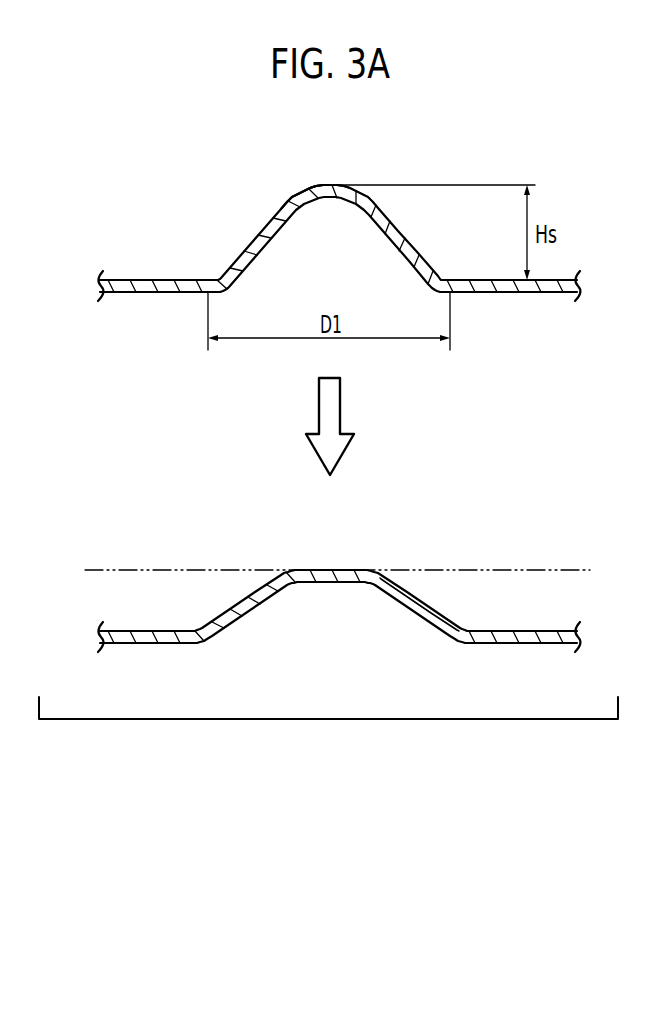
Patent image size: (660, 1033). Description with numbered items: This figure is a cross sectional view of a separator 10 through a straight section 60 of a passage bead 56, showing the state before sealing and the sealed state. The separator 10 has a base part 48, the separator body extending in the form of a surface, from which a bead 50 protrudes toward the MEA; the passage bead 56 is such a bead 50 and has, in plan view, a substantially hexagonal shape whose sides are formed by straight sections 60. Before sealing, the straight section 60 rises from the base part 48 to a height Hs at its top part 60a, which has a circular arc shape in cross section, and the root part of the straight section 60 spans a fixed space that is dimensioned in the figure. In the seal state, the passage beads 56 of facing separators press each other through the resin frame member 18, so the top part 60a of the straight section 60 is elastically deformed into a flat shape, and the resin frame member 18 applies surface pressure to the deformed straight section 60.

The separator 10 is at (138, 153).
The base part 48 is at (153, 287).
The straight section 60 is at (250, 238).
The top part 60a is at (331, 185).
The passage bead 56 is at (357, 376).
The bead 50 is at (291, 175).
The resin frame member 18 is at (517, 571).